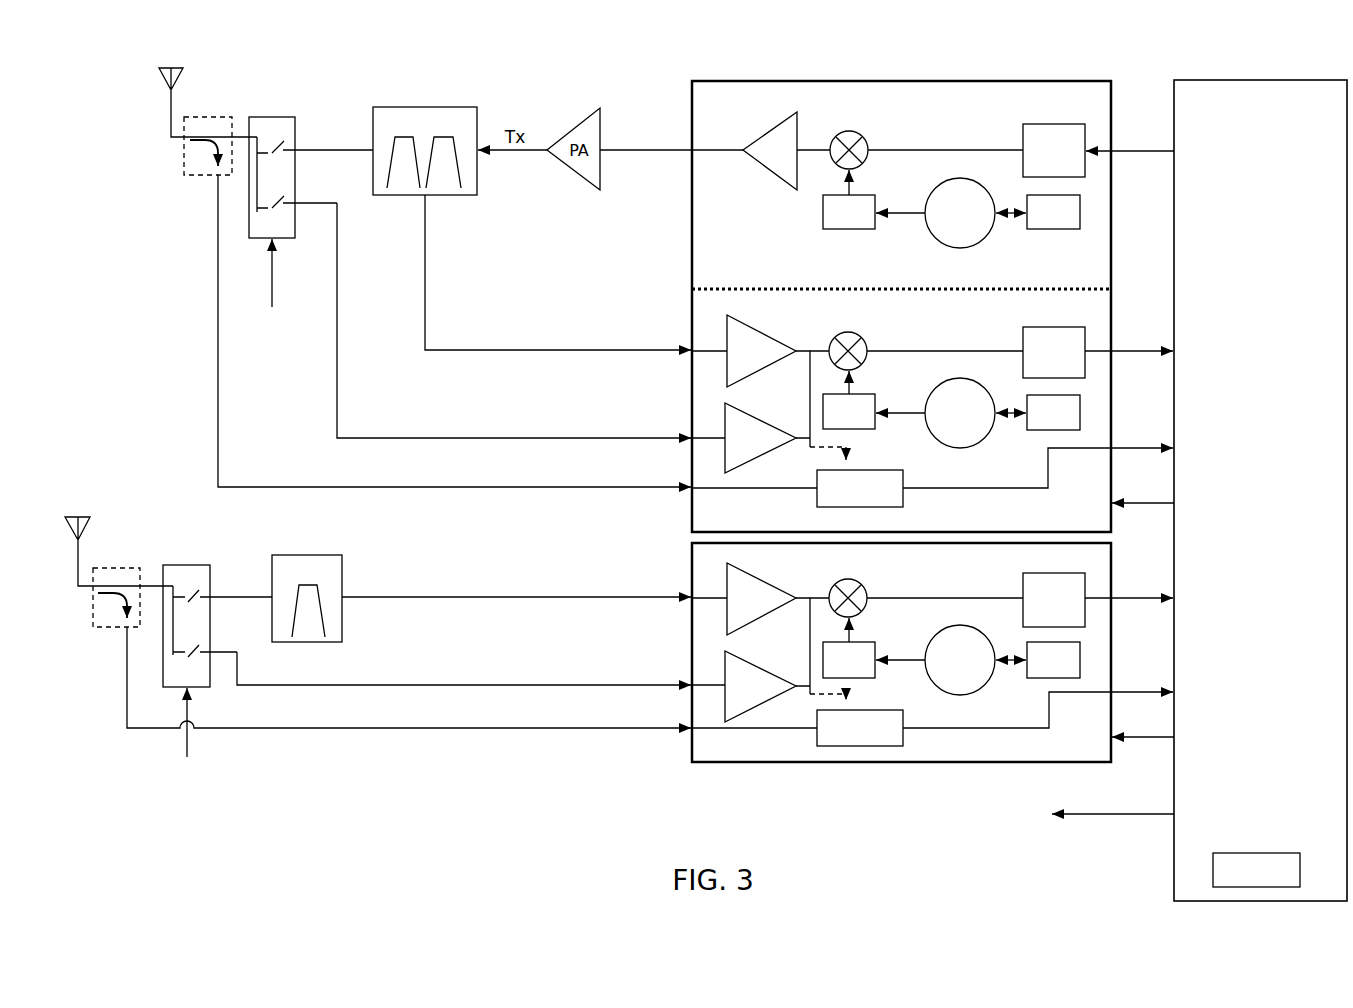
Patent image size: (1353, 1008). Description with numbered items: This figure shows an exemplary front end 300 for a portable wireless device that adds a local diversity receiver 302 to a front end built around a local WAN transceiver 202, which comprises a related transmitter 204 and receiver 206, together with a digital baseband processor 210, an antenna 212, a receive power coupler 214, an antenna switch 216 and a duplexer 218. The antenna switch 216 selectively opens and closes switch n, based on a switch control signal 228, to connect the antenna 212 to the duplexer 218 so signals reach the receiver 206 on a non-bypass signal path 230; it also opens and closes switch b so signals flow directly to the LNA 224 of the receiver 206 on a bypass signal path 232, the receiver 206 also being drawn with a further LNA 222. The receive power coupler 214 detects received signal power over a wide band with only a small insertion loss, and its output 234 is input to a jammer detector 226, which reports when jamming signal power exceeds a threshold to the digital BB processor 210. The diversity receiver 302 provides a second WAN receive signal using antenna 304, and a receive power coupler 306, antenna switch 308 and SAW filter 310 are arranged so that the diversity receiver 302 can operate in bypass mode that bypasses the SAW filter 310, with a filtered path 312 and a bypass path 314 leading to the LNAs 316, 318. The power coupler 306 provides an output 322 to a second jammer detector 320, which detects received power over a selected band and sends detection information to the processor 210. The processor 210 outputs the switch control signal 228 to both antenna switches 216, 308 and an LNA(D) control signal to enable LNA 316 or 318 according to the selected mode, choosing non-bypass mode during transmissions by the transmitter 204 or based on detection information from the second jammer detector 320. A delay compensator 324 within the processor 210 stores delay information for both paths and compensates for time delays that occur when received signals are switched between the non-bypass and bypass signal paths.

The front end 300 is at (112, 117).
The antenna 212 is at (196, 62).
The receive power coupler 214 is at (184, 143).
The antenna switch 216 is at (278, 117).
The duplexer 218 is at (467, 107).
The switch control signal 228 is at (275, 252).
The non-bypass signal path 230 is at (426, 288).
The bypass signal path 232 is at (338, 390).
The power coupler output 234 is at (477, 487).
The local WAN transceiver 202 is at (922, 60).
The transmitter 204 is at (920, 195).
The receiver 206 is at (991, 372).
The LNA 222 is at (752, 321).
The LNA 224 is at (745, 404).
The jammer detector 226 is at (864, 470).
The digital baseband processor 210 is at (1250, 80).
The delay compensator 324 is at (1275, 853).
The antenna 304 is at (92, 505).
The receive power coupler 306 is at (115, 568).
The antenna switch 308 is at (189, 565).
The SAW filter 310 is at (324, 643).
The receive signal path from SAW filter 312 is at (451, 597).
The bypass signal path 314 is at (444, 685).
The power coupler output 322 is at (443, 728).
The local diversity receiver 302 is at (932, 652).
The LNA 316 is at (753, 574).
The LNA 318 is at (738, 655).
The second jammer detector 320 is at (859, 710).